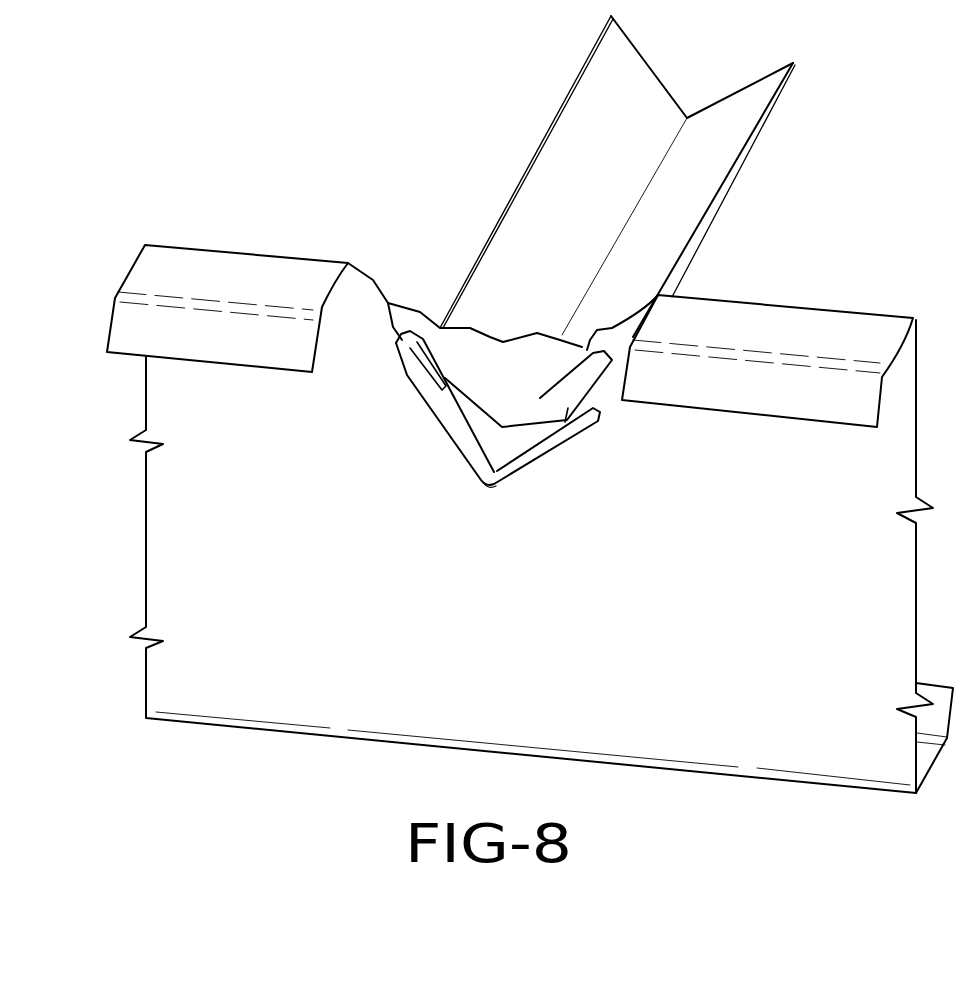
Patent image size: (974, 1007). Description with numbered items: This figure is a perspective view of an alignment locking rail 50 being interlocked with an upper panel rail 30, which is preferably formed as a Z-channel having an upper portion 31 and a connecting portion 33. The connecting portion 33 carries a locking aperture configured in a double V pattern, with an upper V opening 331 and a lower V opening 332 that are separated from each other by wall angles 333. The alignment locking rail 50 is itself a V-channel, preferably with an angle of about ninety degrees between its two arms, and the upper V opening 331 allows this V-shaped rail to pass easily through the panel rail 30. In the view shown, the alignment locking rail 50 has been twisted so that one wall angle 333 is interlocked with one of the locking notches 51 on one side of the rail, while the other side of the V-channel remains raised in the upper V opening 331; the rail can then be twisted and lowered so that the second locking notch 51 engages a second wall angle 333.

The upper panel rail 30 is at (226, 247).
The upper portion 31 is at (835, 352).
The connecting portion 33 is at (185, 480).
The upper V opening 331 is at (390, 305).
The lower V opening 332 is at (507, 480).
The wall angle 333 is at (605, 398).
The alignment locking rail 50 is at (738, 120).
The locking notch 51 is at (540, 398).